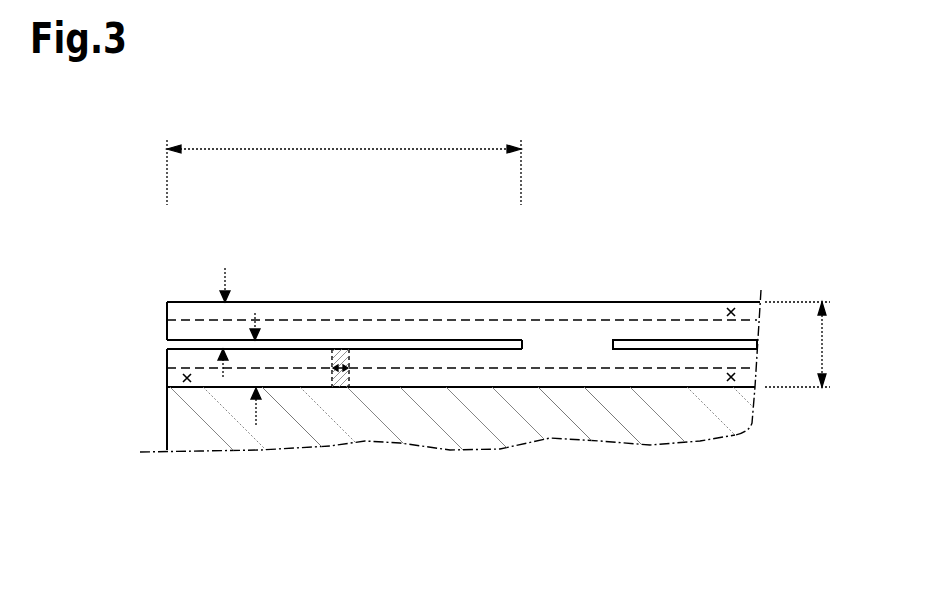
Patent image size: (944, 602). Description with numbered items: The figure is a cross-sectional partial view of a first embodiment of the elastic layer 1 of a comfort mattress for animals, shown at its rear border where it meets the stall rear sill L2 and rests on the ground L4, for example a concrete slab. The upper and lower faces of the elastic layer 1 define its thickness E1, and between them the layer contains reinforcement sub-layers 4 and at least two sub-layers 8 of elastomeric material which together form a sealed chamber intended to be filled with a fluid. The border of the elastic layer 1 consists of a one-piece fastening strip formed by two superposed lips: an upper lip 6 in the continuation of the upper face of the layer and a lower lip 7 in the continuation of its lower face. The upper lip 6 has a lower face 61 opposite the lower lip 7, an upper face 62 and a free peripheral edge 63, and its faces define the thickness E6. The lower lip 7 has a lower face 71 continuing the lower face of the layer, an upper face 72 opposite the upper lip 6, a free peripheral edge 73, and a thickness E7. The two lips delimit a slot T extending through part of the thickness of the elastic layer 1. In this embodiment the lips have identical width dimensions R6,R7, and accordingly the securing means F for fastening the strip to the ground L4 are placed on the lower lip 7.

The elastic layer 1 is at (780, 293).
The reinforcement sub-layer 4 is at (685, 320).
The upper lip 6 is at (196, 300).
The lower lip 7 is at (183, 379).
The sub-layer of elastomeric material 8 is at (731, 308).
The lower face of upper lip 61 is at (383, 326).
The upper face of upper lip 62 is at (462, 289).
The free peripheral edge of upper lip 63 is at (154, 318).
The lower face of lower lip 71 is at (434, 405).
The upper face of lower lip 72 is at (489, 326).
The free peripheral edge of lower lip 73 is at (154, 357).
The thickness of elastic layer E1 is at (815, 344).
The thickness of upper lip E6 is at (228, 270).
The thickness of lower lip E7 is at (256, 415).
The securing means F is at (345, 378).
The stall rear sill L2 is at (154, 433).
The ground L4 is at (280, 437).
The width dimensions of lips R6,R7 is at (344, 160).
The slot T is at (276, 326).